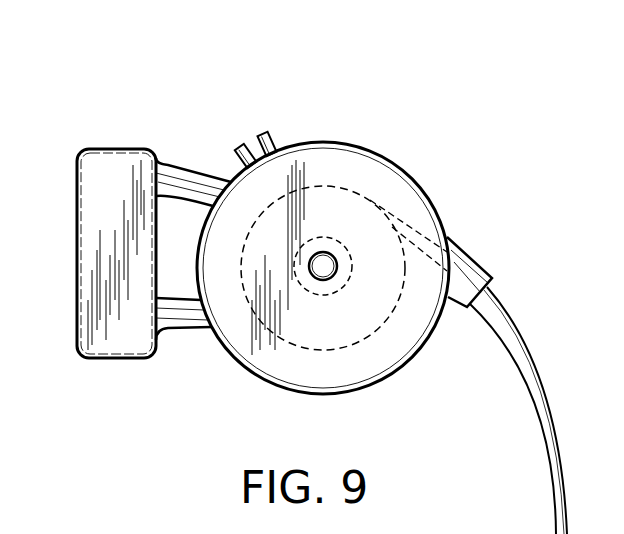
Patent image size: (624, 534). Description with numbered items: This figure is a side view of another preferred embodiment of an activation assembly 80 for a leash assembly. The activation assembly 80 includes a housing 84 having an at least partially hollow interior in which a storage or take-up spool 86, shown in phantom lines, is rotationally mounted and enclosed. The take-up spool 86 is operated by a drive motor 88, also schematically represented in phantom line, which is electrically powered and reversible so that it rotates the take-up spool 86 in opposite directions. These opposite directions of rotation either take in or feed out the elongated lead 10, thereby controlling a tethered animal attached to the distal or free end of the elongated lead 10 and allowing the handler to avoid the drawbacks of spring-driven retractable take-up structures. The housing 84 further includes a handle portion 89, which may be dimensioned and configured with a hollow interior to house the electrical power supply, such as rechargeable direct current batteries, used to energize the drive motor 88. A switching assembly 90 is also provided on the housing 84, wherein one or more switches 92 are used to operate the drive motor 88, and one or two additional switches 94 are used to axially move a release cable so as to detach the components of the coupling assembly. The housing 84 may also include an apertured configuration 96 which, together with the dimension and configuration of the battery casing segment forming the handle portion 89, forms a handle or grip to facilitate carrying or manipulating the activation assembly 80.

The elongated lead 10 is at (524, 345).
The activation assembly 80 is at (434, 175).
The housing 84 is at (252, 373).
The take-up spool 86 is at (347, 343).
The drive motor 88 is at (322, 237).
The handle portion 89 is at (113, 149).
The switching assembly 90 is at (226, 98).
The switch 92 is at (237, 146).
The switch 94 is at (259, 131).
The apertured configuration 96 is at (157, 270).